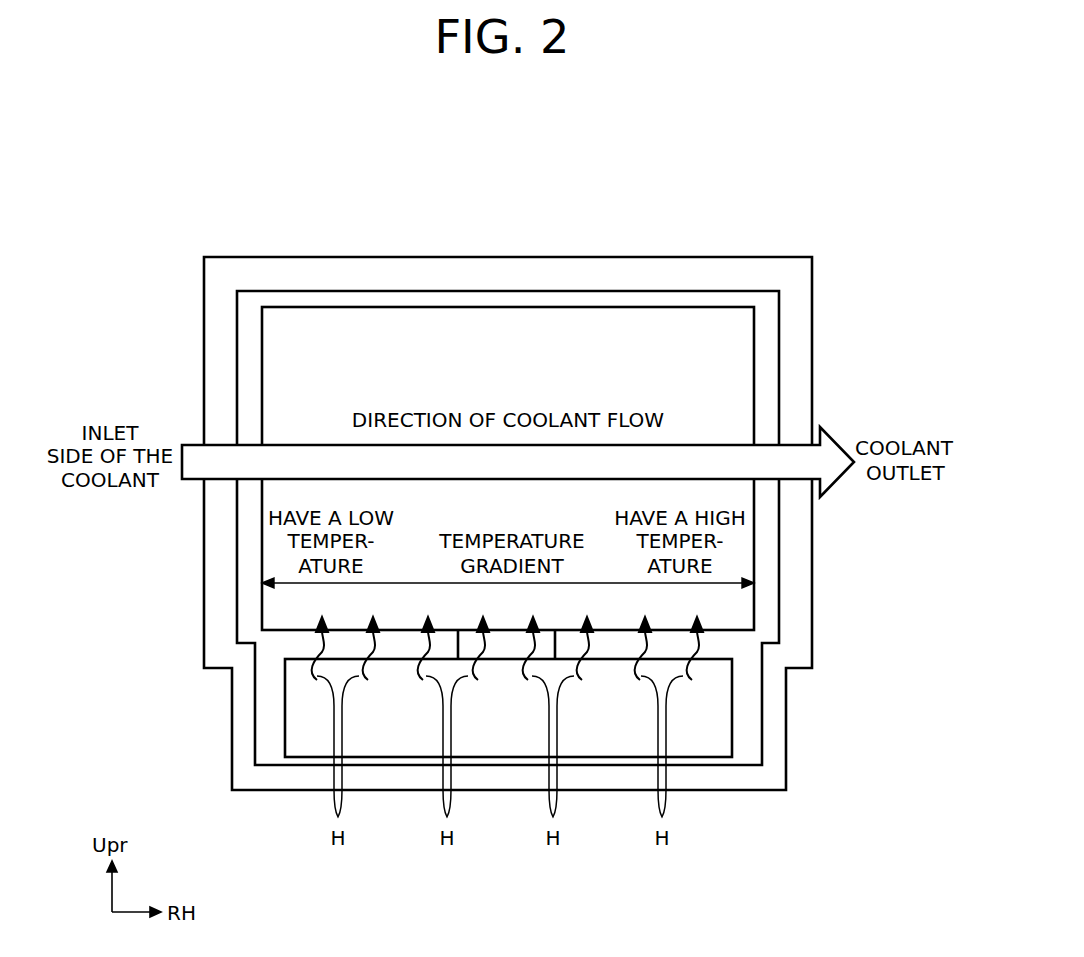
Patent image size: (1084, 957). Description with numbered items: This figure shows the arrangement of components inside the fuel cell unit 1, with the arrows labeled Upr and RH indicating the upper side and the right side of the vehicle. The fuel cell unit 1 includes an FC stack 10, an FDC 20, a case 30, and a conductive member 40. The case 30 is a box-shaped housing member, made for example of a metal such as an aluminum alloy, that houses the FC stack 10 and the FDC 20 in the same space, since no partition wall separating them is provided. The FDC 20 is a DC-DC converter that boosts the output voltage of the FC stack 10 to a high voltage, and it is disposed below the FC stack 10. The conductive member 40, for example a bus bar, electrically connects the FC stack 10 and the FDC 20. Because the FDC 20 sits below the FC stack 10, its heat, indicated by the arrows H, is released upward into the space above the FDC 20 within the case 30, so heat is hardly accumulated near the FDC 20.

The fuel cell unit 1 is at (526, 495).
The FC stack 10 is at (262, 340).
The FDC 20 is at (285, 712).
The case 30 is at (815, 299).
The conductive member 40 is at (557, 644).